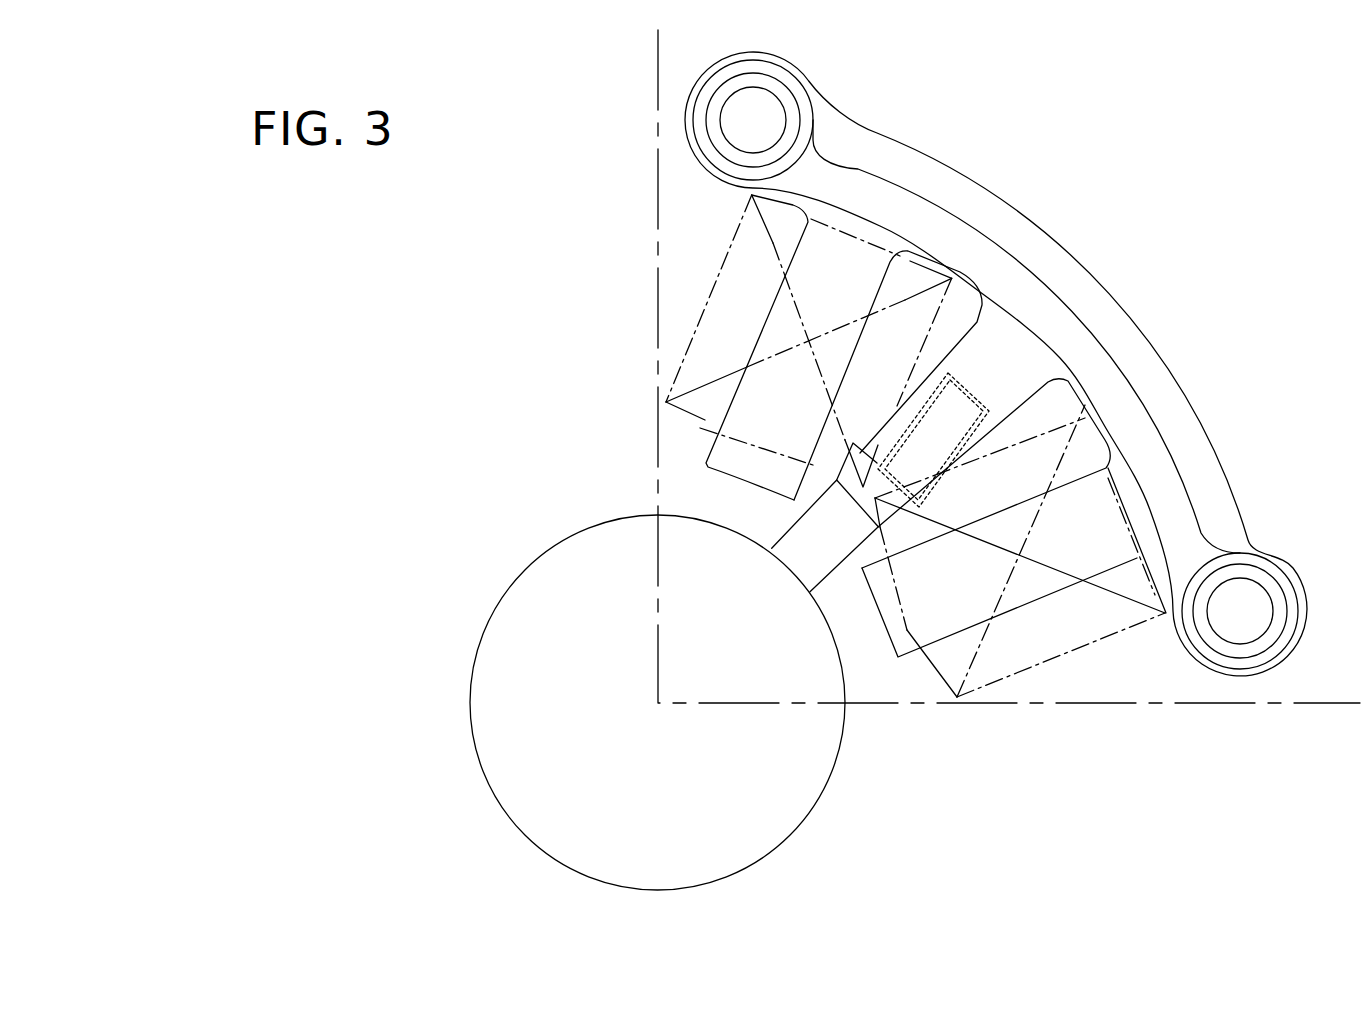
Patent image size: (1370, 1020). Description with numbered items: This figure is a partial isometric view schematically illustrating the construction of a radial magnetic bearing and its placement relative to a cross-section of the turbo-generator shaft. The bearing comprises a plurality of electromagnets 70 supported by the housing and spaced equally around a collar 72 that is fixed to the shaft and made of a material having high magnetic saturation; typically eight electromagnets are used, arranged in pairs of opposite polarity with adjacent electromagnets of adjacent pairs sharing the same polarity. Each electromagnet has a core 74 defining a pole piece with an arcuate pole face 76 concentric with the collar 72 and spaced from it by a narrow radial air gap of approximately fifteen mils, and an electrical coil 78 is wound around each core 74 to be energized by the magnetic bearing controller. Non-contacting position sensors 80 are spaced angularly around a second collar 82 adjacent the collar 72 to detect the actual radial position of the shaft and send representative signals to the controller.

The electromagnets 70 is at (634, 98).
The collar 72 is at (528, 568).
The core 74 is at (908, 630).
The arcuate pole face 76 is at (860, 647).
The electrical coil 78 is at (1073, 622).
The non-contacting position sensors 80 is at (810, 532).
The collar 82 is at (1017, 230).